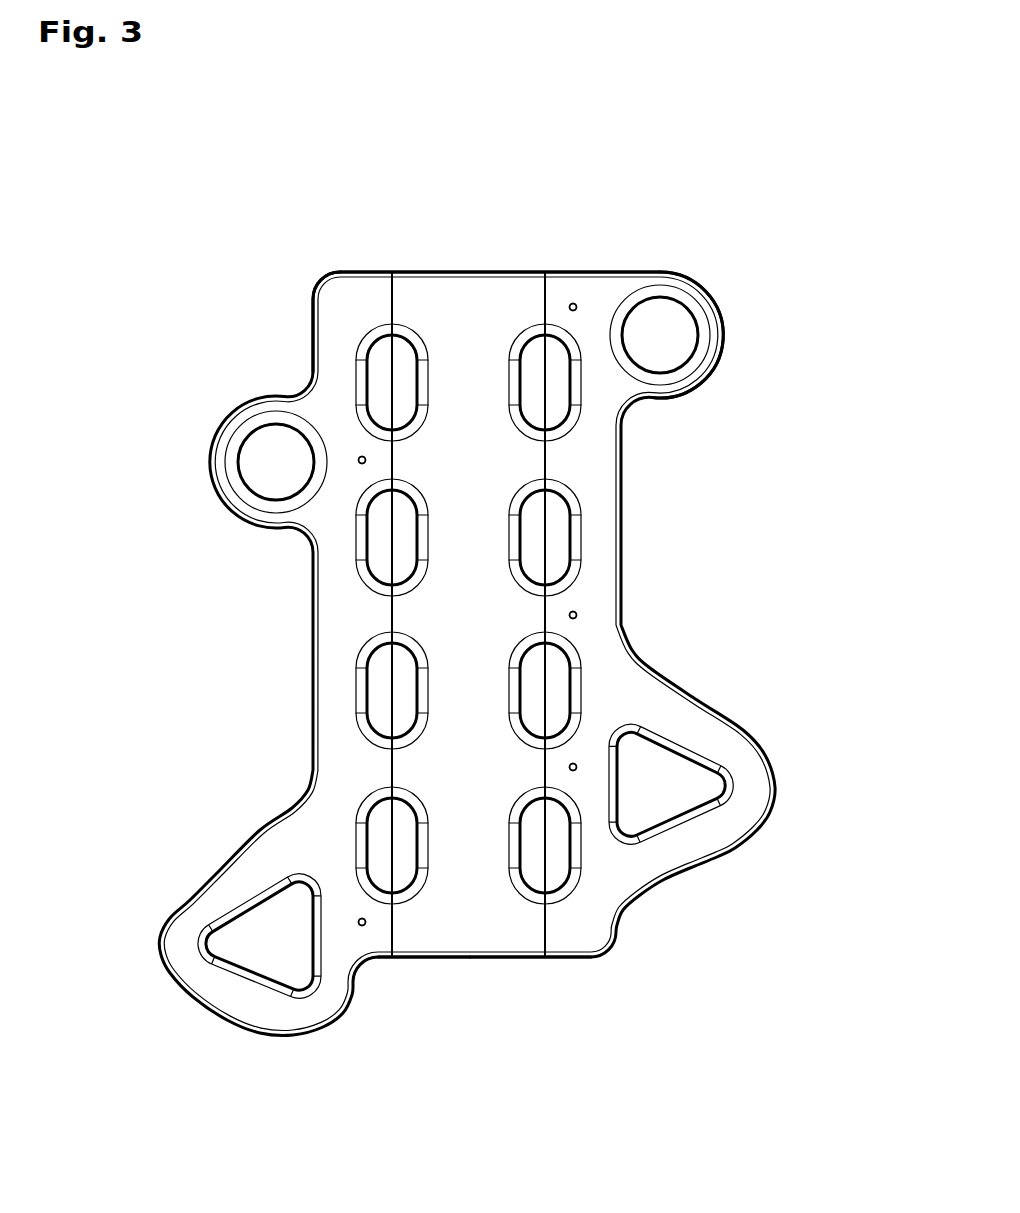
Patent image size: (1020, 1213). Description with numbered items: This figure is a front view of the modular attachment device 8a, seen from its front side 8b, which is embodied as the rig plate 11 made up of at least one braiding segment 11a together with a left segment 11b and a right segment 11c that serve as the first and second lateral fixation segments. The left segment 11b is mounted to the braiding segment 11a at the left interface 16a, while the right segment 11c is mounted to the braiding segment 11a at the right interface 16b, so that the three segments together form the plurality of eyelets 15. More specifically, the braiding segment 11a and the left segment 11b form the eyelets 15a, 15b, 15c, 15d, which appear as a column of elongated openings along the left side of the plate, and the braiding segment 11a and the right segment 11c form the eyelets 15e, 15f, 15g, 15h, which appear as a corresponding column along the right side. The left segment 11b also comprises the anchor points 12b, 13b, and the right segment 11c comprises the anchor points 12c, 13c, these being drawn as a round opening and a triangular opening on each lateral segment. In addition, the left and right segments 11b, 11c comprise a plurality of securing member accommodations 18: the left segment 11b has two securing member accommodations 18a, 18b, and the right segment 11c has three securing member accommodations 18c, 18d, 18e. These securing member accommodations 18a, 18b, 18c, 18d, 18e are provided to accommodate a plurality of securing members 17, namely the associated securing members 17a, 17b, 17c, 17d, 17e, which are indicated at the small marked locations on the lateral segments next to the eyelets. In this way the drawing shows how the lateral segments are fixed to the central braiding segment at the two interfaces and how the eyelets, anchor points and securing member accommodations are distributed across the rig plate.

The attachment device 8a is at (667, 85).
The front side 8b is at (445, 883).
The rig plate 11 is at (331, 167).
The braiding segment 11a is at (433, 268).
The left segment 11b is at (356, 268).
The right segment 11c is at (622, 268).
The anchor point 12b is at (276, 462).
The anchor point 12c is at (670, 332).
The anchor point 13b is at (252, 948).
The anchor point 13c is at (673, 805).
The eyelets 15 is at (356, 328).
The eyelet 15a is at (377, 368).
The eyelet 15b is at (390, 562).
The eyelet 15c is at (383, 697).
The eyelet 15d is at (390, 820).
The eyelet 15e is at (550, 393).
The eyelet 15f is at (553, 527).
The eyelet 15g is at (542, 697).
The eyelet 15h is at (552, 868).
The left interface 16a is at (393, 961).
The right interface 16b is at (547, 961).
The securing members 17 is at (572, 296).
The securing member 17a is at (362, 464).
The securing member 17b is at (362, 927).
The securing member 17c is at (579, 306).
The securing member 17d is at (575, 612).
The securing member 17e is at (574, 762).
The securing member accommodations 18 is at (378, 917).
The securing member accommodation 18a is at (355, 448).
The securing member accommodation 18b is at (357, 915).
The securing member accommodation 18c is at (566, 308).
The securing member accommodation 18d is at (582, 631).
The securing member accommodation 18e is at (589, 786).